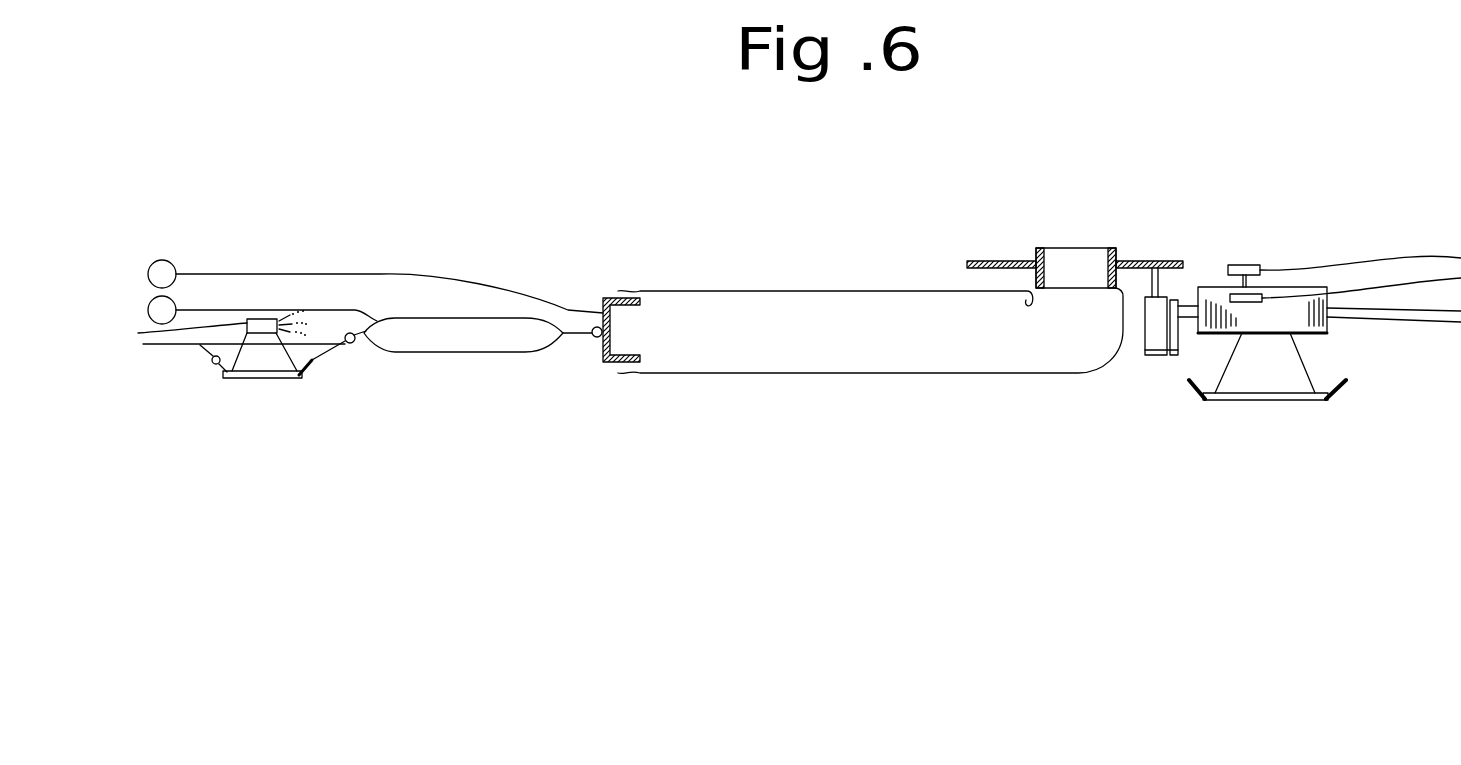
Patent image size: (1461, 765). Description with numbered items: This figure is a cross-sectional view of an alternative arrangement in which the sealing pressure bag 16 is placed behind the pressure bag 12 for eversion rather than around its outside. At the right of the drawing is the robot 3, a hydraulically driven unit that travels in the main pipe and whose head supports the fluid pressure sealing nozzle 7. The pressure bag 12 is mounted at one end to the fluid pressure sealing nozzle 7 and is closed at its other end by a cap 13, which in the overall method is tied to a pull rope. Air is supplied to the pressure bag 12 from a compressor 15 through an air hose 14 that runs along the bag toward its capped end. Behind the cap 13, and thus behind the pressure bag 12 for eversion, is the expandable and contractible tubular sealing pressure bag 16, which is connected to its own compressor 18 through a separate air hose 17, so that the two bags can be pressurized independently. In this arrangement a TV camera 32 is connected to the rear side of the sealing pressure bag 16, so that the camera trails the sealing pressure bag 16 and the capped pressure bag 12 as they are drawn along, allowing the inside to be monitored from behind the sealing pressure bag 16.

The robot 3 is at (1295, 292).
The fluid pressure sealing nozzle 7 is at (1142, 258).
The pressure bag 12 is at (866, 377).
The cap 13 is at (603, 355).
The air hose 14 is at (438, 270).
The compressor 15 is at (163, 260).
The sealing pressure bag 16 is at (421, 353).
The air hose 17 is at (332, 308).
The compressor 18 is at (148, 312).
The TV camera 32 is at (258, 318).